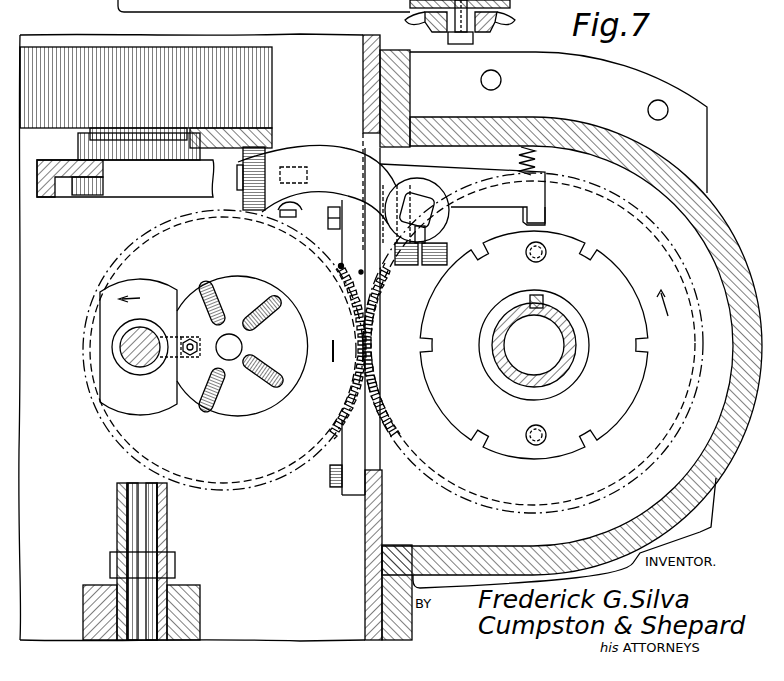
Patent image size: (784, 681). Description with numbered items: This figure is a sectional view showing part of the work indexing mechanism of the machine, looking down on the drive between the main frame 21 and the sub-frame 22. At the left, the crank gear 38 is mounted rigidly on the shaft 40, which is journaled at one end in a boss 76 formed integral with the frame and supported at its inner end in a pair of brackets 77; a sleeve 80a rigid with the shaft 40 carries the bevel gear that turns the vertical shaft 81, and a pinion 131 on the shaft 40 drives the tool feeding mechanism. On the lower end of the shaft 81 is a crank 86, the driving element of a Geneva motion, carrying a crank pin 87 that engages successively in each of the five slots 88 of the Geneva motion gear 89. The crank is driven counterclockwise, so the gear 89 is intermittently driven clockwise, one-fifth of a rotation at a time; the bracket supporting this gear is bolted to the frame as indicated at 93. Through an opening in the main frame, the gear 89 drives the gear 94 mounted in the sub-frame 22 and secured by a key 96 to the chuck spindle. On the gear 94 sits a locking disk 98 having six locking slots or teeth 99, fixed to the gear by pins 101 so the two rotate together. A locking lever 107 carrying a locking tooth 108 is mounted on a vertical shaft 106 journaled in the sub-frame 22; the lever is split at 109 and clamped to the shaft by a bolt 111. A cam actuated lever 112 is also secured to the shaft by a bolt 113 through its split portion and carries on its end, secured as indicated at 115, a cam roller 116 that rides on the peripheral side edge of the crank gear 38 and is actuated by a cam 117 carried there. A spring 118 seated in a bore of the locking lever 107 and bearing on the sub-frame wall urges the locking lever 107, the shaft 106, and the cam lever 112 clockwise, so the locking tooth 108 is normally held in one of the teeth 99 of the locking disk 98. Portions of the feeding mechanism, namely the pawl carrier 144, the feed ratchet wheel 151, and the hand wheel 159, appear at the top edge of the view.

The main frame 21 is at (372, 533).
The sub-frame 22 is at (727, 464).
The crank gear 38 is at (267, 72).
The shaft 40 is at (152, 536).
The boss 76 is at (203, 608).
The brackets 77 is at (45, 197).
The sleeve 80a is at (170, 512).
The vertical shaft 81 is at (138, 355).
The crank 86 is at (152, 405).
The crank pin 87 is at (193, 336).
The slots 88 is at (262, 322).
The Geneva motion gear 89 is at (283, 470).
The bolting of bracket 93 is at (335, 490).
The gear 94 is at (438, 482).
The key 96 is at (542, 293).
The locking disk 98 is at (441, 400).
The locking slots or teeth 99 is at (430, 350).
The pins 101 is at (522, 258).
The vertical shaft 106 is at (414, 203).
The locking lever 107 is at (470, 180).
The locking tooth 108 is at (537, 213).
The split portion 109 is at (340, 216).
The bolt 111 is at (380, 273).
The cam actuated lever 112 is at (330, 157).
The bolt 113 is at (440, 233).
The roller mounting 115 is at (300, 192).
The cam roller 116 is at (252, 208).
The cam 117 is at (273, 130).
The spring 118 is at (540, 153).
The pinion 131 is at (177, 563).
The pawl carrier 144 is at (314, 6).
The feed ratchet wheel 151 is at (503, 22).
The hand wheel 159 is at (497, 22).